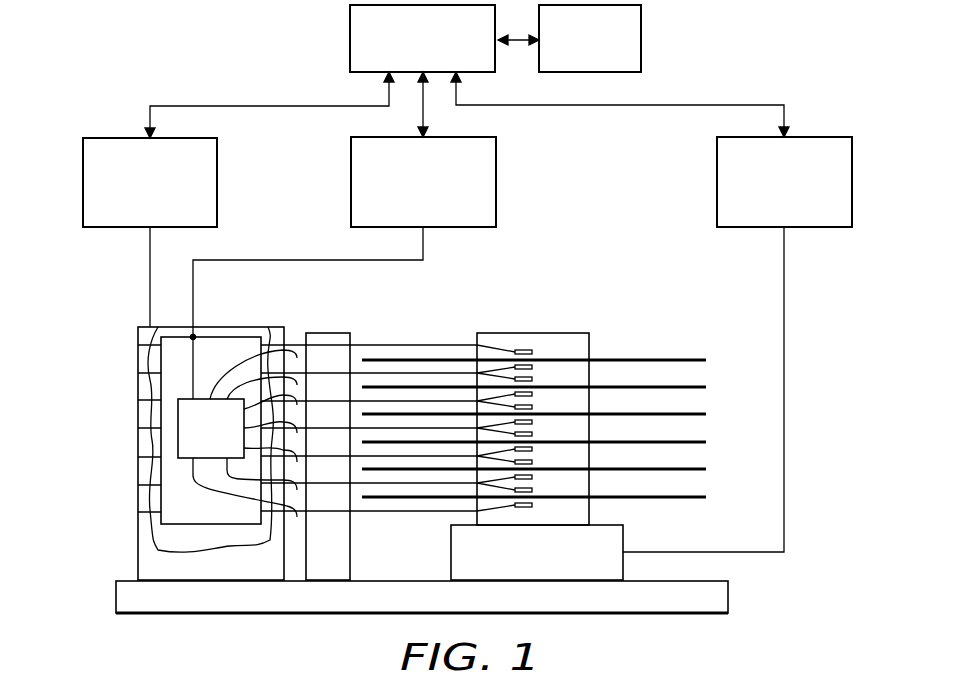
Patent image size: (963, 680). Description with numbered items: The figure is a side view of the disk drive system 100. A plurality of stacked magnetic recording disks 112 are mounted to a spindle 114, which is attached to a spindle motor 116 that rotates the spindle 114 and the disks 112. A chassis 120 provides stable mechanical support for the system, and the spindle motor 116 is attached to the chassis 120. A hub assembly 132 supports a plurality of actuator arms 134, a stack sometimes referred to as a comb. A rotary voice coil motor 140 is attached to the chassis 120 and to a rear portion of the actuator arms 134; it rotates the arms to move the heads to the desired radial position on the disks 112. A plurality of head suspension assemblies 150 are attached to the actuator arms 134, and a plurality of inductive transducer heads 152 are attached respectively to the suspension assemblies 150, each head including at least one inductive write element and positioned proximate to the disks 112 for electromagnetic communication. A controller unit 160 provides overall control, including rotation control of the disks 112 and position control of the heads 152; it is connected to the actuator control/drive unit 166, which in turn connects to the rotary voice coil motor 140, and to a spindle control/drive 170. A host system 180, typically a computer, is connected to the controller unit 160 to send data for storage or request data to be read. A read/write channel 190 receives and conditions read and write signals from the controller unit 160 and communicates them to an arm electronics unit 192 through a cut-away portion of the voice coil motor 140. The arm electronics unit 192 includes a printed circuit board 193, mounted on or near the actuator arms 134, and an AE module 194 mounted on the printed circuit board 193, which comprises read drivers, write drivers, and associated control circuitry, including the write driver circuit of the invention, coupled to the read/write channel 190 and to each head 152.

The disk drive system 100 is at (123, 358).
The magnetic recording disks 112 is at (706, 386).
The spindle 114 is at (592, 343).
The spindle motor 116 is at (558, 566).
The chassis 120 is at (728, 595).
The hub assembly 132 is at (328, 333).
The actuator arms 134 is at (420, 372).
The rotary voice coil motor 140 is at (138, 548).
The head suspension assemblies 150 is at (507, 376).
The inductive transducer heads 152 is at (534, 366).
The controller unit 160 is at (350, 38).
The actuator control/drive unit 166 is at (83, 180).
The spindle control/drive 170 is at (852, 180).
The host system 180 is at (641, 38).
The read/write channel 190 is at (496, 182).
The arm electronics unit 192 is at (175, 381).
The printed circuit board 193 is at (177, 497).
The AE module 194 is at (230, 442).